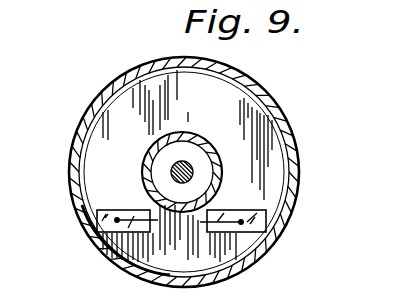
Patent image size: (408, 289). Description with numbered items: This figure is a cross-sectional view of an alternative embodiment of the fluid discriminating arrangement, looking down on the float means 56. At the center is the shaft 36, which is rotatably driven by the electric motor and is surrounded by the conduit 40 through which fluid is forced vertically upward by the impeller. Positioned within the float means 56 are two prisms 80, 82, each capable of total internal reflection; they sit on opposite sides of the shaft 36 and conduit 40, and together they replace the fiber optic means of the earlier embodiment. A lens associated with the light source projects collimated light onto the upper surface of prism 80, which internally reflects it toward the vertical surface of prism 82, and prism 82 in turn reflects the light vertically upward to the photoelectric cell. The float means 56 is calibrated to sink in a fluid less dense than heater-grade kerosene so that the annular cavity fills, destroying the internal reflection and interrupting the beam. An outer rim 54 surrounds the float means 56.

The shaft 36 is at (183, 168).
The conduit 40 is at (143, 158).
The rim 54 is at (271, 100).
The float means 56 is at (128, 105).
The prism 80 is at (112, 211).
The prism 82 is at (248, 209).